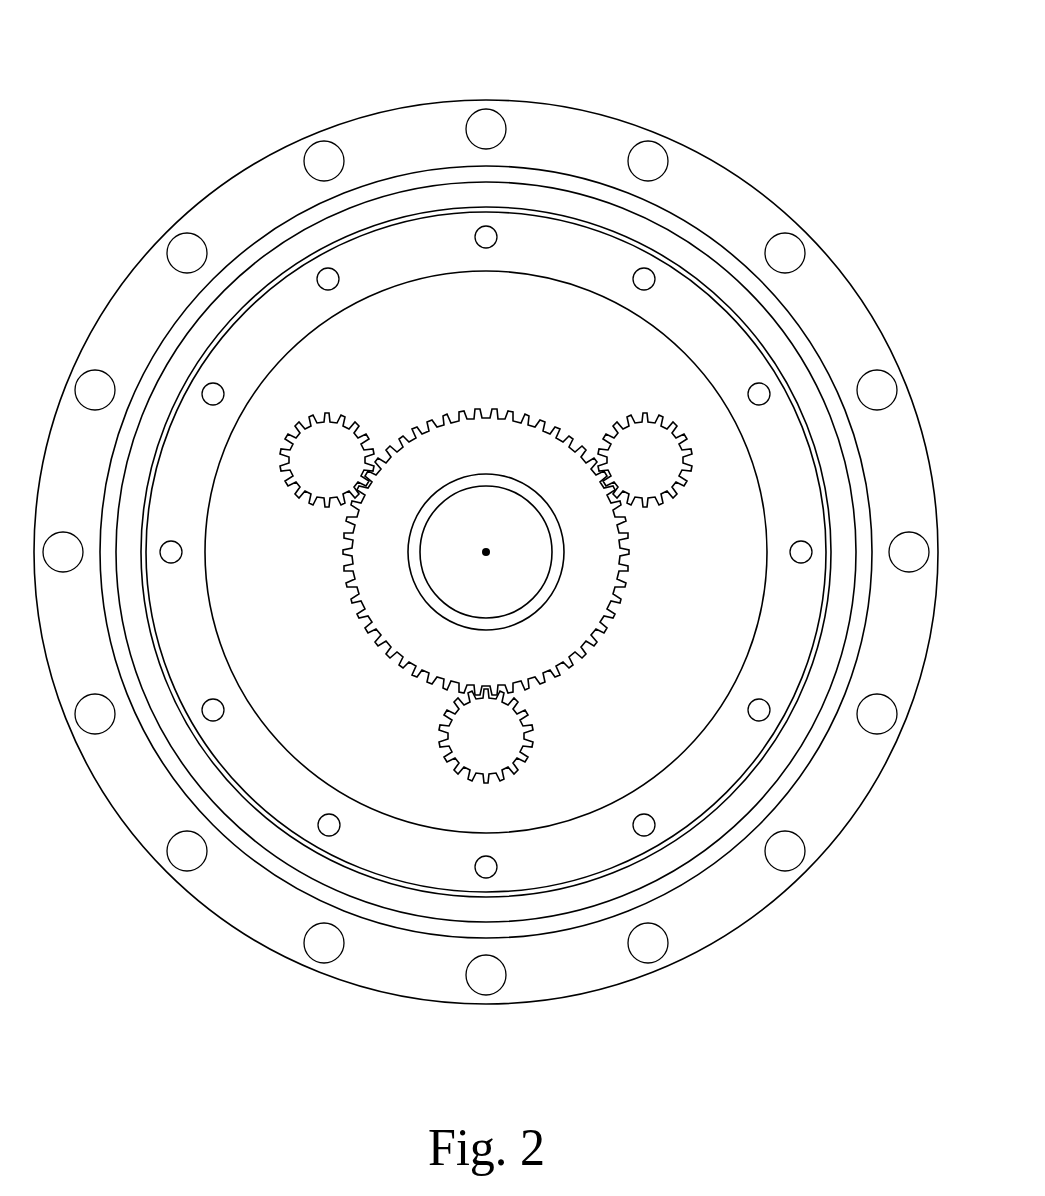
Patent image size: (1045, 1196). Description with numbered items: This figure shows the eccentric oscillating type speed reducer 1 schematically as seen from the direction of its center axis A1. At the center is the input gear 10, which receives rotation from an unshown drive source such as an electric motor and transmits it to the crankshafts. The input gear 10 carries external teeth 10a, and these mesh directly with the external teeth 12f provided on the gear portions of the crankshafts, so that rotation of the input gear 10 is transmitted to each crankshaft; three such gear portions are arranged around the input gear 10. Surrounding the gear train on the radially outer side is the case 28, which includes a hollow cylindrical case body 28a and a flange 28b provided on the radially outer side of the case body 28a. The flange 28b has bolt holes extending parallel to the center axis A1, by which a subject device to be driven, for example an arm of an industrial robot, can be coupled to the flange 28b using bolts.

The speed reducer 1 is at (726, 80).
The case 28 is at (786, 194).
The case body 28a is at (680, 230).
The flange 28b is at (837, 298).
The input gear 10 is at (528, 530).
The external teeth 10a is at (612, 617).
The center axis A1 is at (486, 552).
The external teeth 12f is at (647, 503).